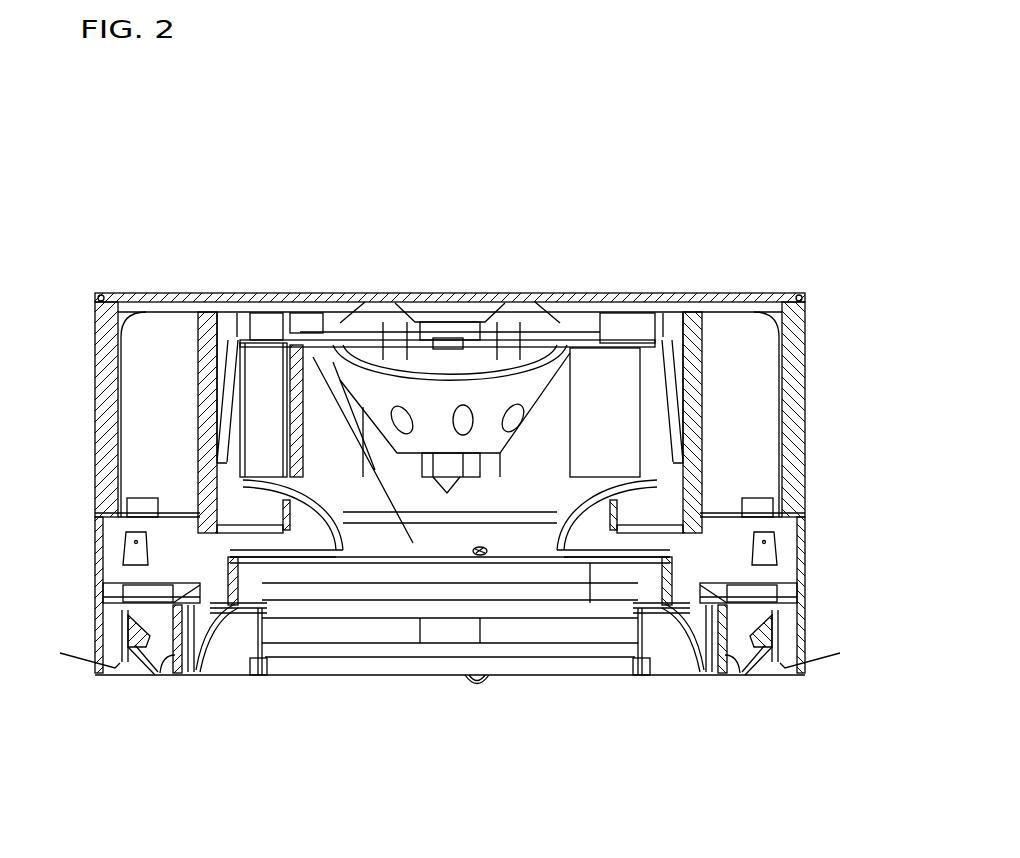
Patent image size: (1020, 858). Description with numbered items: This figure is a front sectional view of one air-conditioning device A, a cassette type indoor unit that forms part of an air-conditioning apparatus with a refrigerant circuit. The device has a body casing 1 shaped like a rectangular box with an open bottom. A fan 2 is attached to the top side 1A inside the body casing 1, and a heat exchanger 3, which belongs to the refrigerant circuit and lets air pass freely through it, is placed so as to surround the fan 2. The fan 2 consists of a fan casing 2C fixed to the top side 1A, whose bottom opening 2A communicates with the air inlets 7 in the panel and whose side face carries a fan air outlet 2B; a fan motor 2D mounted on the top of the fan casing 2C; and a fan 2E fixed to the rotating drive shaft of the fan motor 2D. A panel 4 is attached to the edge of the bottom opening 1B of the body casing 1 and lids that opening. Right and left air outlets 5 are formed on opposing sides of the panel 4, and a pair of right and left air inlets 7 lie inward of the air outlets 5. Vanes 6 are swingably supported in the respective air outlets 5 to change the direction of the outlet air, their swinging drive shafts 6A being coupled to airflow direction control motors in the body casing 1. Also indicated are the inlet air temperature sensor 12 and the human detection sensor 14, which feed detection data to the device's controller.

The body casing 1 is at (96, 346).
The top side 1A is at (463, 296).
The bottom opening 1B is at (512, 652).
The fan 2 is at (743, 144).
The bottom opening 2A is at (333, 368).
The fan air outlet 2B is at (262, 370).
The fan casing 2C is at (633, 335).
The fan motor 2D is at (422, 330).
The fan 2E is at (592, 366).
The heat exchanger 3 is at (205, 355).
The panel 4 is at (452, 668).
The air outlets 5 is at (150, 672).
The vanes 6 is at (128, 655).
The swinging drive shafts 6A is at (118, 640).
The air inlets 7 is at (228, 668).
The inlet air temperature sensor 12 is at (470, 556).
The human detection sensor 14 is at (477, 690).
The air-conditioning device A is at (815, 180).